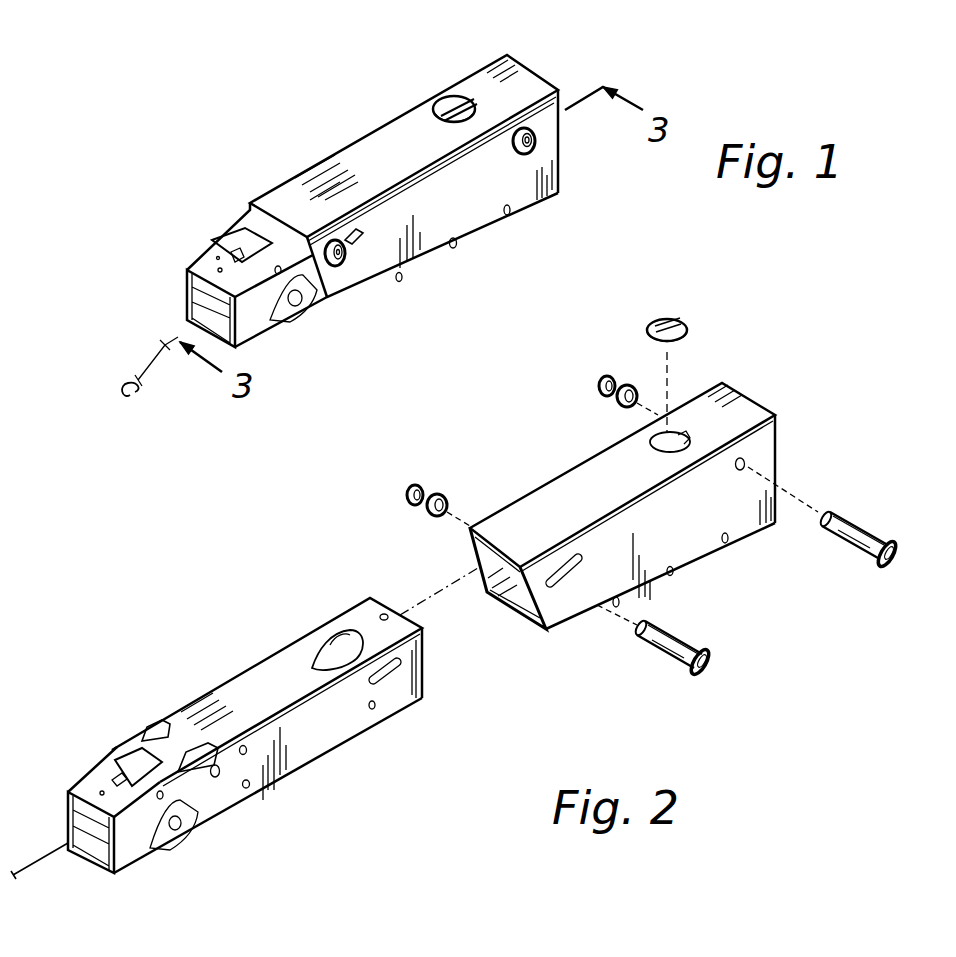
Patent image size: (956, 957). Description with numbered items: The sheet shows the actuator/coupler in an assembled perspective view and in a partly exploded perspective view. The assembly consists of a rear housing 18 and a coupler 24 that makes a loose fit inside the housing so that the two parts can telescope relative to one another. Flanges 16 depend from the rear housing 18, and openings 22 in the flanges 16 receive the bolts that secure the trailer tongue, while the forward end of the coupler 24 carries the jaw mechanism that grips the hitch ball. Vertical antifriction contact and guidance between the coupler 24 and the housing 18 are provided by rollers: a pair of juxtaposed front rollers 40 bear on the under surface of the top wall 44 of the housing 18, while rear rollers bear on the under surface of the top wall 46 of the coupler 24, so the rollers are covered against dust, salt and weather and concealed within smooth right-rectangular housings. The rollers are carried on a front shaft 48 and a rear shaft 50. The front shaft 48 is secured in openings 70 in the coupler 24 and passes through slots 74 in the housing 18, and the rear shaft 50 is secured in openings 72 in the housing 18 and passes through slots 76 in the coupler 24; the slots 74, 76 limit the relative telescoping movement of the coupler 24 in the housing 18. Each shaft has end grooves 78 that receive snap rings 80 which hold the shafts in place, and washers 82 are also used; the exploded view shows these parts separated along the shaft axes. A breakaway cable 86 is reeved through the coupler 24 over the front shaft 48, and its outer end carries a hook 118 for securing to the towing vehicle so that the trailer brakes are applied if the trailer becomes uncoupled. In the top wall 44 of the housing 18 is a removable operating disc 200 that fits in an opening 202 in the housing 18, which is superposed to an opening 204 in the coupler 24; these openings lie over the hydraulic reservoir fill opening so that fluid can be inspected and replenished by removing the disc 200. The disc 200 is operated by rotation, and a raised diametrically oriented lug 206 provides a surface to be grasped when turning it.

In FIG. 1, the flanges 16 is at (440, 268).
In FIG. 2, the flanges 16 is at (752, 534).
In FIG. 1, the rear housing 18 is at (393, 118).
In FIG. 2, the rear housing 18 is at (552, 480).
In FIG. 1, the openings 22 is at (460, 242).
In FIG. 2, the openings 22 is at (675, 575).
In FIG. 1, the coupler 24 is at (266, 330).
In FIG. 2, the coupler 24 is at (318, 757).
In FIG. 2, the front rollers 40 is at (197, 745).
In FIG. 1, the top wall 44 is at (358, 178).
In FIG. 2, the top wall 44 is at (466, 540).
In FIG. 2, the top wall 46 is at (240, 688).
In FIG. 1, the front shaft 48 is at (343, 263).
In FIG. 2, the front shaft 48 is at (670, 655).
In FIG. 1, the rear shaft 50 is at (545, 148).
In FIG. 2, the rear shaft 50 is at (860, 535).
In FIG. 2, the openings 70 is at (218, 778).
In FIG. 2, the openings 72 is at (745, 462).
In FIG. 1, the slots 74 is at (367, 243).
In FIG. 2, the slots 74 is at (540, 624).
In FIG. 2, the slots 76 is at (400, 680).
In FIG. 2, the end grooves 78 is at (830, 510).
In FIG. 1, the snap rings 80 is at (334, 238).
In FIG. 2, the snap rings 80 is at (600, 383).
In FIG. 2, the washers 82 is at (620, 404).
In FIG. 1, the breakaway cable 86 is at (176, 337).
In FIG. 2, the breakaway cable 86 is at (50, 860).
In FIG. 1, the hook 118 is at (136, 397).
In FIG. 1, the operating disc 200 is at (505, 99).
In FIG. 2, the operating disc 200 is at (648, 332).
In FIG. 2, the opening 202 is at (686, 436).
In FIG. 2, the opening 204 is at (343, 633).
In FIG. 1, the lug 206 is at (458, 104).
In FIG. 2, the lug 206 is at (688, 325).